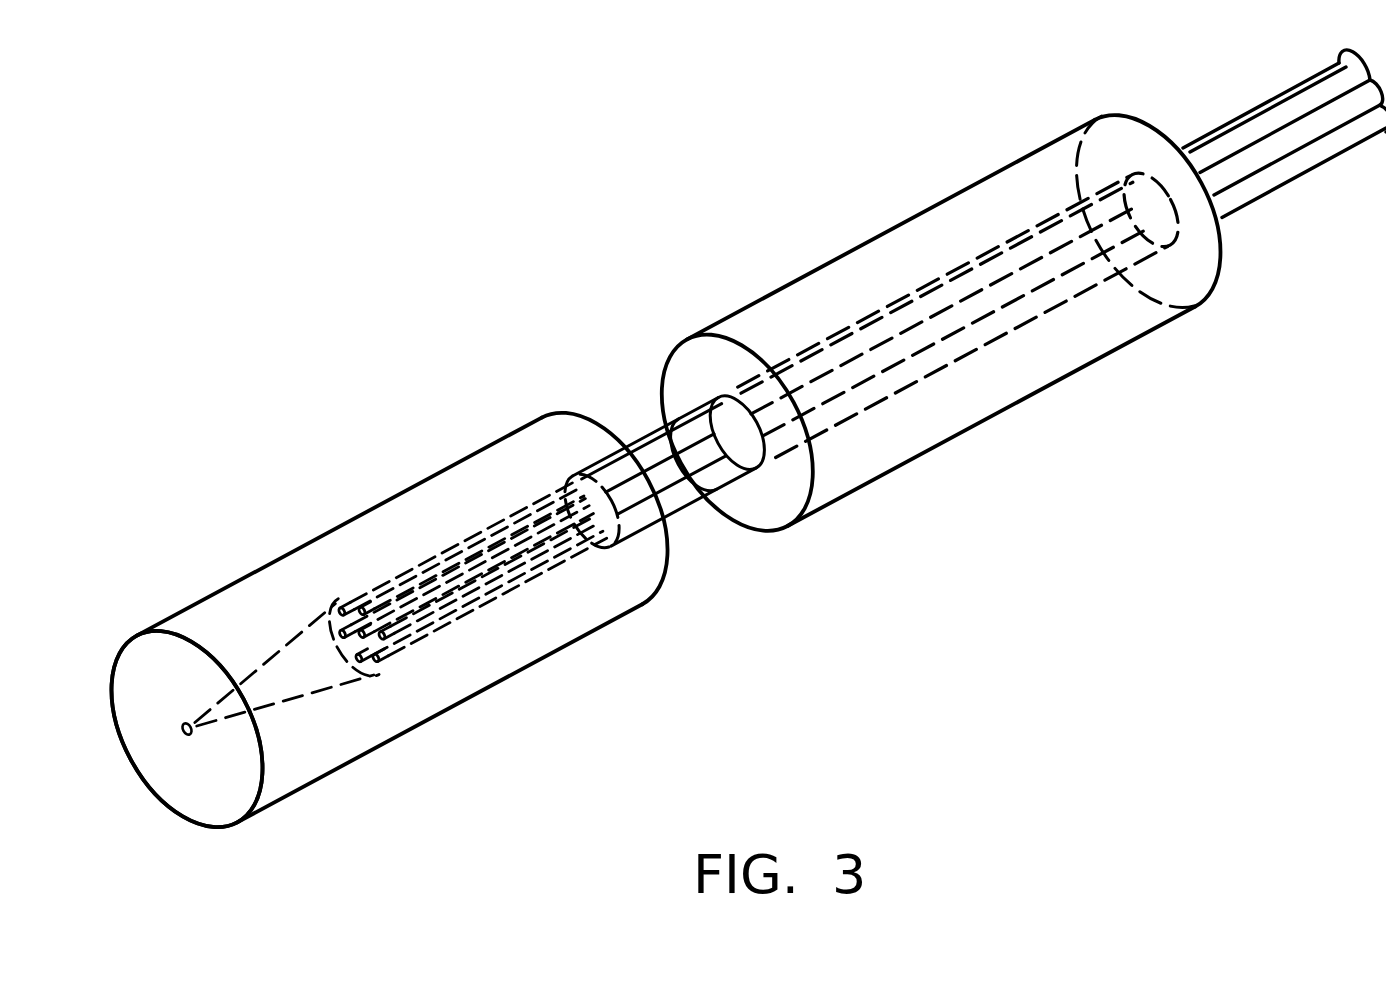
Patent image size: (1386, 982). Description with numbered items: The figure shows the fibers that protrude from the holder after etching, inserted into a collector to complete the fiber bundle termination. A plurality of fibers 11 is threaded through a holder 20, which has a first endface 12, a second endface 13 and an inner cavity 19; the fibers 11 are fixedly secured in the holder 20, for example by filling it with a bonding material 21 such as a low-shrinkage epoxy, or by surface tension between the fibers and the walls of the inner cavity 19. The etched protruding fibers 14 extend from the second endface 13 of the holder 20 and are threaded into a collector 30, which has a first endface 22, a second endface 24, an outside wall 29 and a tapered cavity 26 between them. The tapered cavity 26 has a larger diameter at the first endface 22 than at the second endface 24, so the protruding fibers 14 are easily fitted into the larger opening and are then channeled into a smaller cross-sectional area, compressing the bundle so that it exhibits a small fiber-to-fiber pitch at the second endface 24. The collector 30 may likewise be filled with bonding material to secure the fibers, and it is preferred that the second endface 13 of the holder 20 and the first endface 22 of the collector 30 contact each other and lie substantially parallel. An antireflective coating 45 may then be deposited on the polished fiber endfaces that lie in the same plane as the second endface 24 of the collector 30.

The fibers 11 is at (1292, 87).
The first endface 12 is at (1222, 260).
The second endface 13 is at (772, 505).
The protruding fibers 14 is at (640, 423).
The inner cavity 19 is at (963, 263).
The holder 20 is at (790, 287).
The bonding material 21 is at (480, 523).
The first endface 22 is at (597, 573).
The second endface 24 is at (213, 807).
The tapered cavity 26 is at (307, 697).
The outside wall 29 is at (515, 638).
The collector 30 is at (186, 607).
The antireflective coating 45 is at (185, 788).